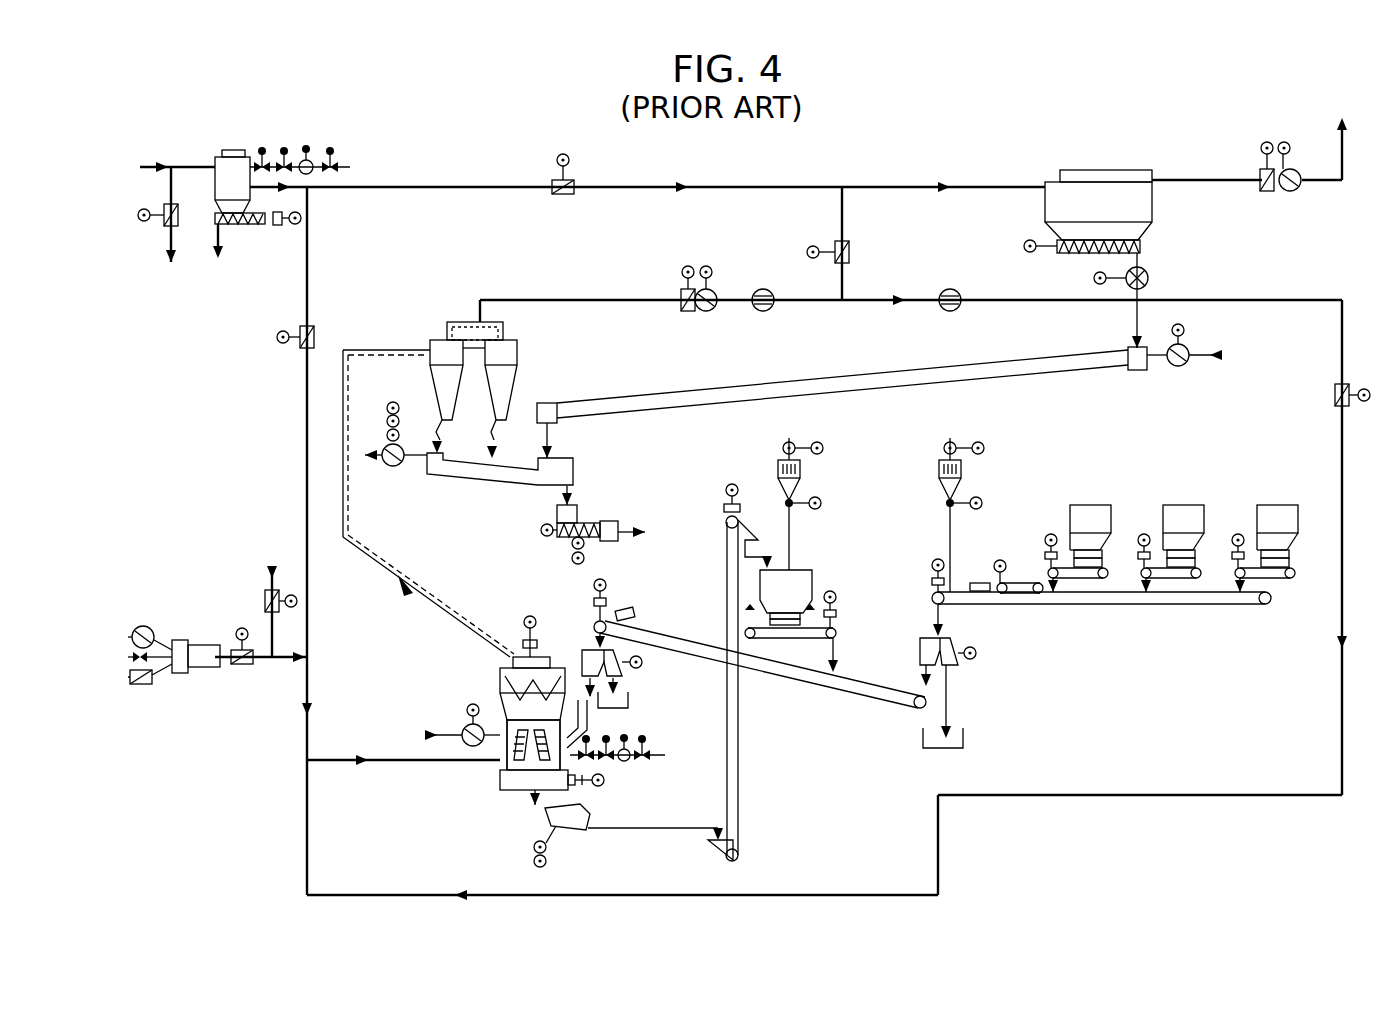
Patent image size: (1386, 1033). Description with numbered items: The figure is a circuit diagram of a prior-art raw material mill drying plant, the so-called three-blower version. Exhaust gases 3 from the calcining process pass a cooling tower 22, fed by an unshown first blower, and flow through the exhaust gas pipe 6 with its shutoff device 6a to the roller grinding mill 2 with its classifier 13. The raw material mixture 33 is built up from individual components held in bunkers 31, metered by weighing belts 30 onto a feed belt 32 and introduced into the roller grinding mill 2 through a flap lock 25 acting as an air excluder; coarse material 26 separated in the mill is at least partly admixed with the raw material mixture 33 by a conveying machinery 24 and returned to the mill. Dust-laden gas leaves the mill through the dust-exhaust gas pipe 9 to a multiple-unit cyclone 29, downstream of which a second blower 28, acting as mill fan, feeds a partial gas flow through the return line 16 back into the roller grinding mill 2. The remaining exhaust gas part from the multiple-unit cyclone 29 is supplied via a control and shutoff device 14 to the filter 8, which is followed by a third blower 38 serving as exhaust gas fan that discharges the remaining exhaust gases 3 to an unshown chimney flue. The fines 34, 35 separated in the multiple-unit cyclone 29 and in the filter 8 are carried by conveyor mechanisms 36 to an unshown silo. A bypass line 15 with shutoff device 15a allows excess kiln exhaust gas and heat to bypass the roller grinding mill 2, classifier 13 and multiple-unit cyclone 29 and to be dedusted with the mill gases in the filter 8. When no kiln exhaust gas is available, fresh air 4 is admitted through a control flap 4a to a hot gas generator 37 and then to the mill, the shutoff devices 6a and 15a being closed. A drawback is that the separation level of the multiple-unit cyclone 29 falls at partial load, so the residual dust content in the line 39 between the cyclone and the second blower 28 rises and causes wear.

The roller grinding mill 2 is at (500, 660).
The exhaust gases 3 is at (176, 196).
The fresh air 4 is at (276, 595).
The control flap 4a is at (256, 618).
The exhaust gas pipe 6 is at (305, 400).
The shutoff device 6a is at (316, 325).
The filter 8 is at (1105, 190).
The dust-exhaust gas pipe 9 is at (343, 510).
The classifier 13 is at (505, 686).
The control and shutoff device 14 is at (850, 250).
The bypass line 15 is at (430, 187).
The shutoff device 15a is at (578, 182).
The return line 16 is at (1025, 297).
The cooling tower 22 is at (245, 152).
The conveying machinery 24 is at (740, 758).
The flap lock 25 is at (585, 718).
The coarse material 26 is at (650, 828).
The second blower 28 is at (715, 290).
The multiple-unit cyclone 29 is at (522, 348).
The weighing belts 30 is at (1090, 580).
The bunkers 31 is at (1085, 520).
The feed belt 32 is at (680, 640).
The raw material mixture 33 is at (935, 612).
The fines 34 is at (1135, 316).
The fines 35 is at (573, 495).
The conveyor mechanisms 36 is at (762, 385).
The hot gas generator 37 is at (205, 667).
The third blower 38 is at (1292, 192).
The line 39 is at (540, 300).